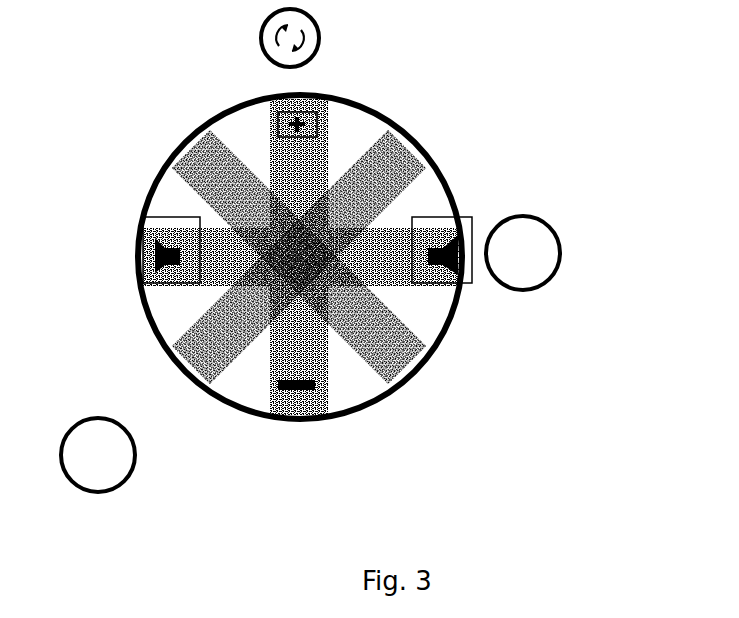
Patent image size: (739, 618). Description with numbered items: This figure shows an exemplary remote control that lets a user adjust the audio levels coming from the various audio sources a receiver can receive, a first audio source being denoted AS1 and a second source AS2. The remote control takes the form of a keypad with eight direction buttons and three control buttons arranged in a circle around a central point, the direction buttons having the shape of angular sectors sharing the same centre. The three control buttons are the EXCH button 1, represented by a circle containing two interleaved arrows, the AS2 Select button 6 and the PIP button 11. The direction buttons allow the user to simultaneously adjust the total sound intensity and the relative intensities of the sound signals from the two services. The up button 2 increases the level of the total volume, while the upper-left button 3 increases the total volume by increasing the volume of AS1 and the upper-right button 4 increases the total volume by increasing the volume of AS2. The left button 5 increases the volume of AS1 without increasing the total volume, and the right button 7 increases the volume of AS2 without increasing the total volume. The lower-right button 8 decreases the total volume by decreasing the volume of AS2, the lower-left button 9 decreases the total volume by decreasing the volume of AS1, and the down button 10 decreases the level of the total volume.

The EXCH control button 1 is at (312, 33).
The up direction button 2 is at (312, 132).
The upper-left direction button 3 is at (211, 182).
The upper-right direction button 4 is at (387, 167).
The left direction button 5 is at (188, 257).
The AS2 Select control button 6 is at (523, 279).
The right direction button 7 is at (402, 263).
The lower-right direction button 8 is at (383, 350).
The lower-left direction button 9 is at (208, 355).
The down direction button 10 is at (298, 405).
The PIP control button 11 is at (98, 468).